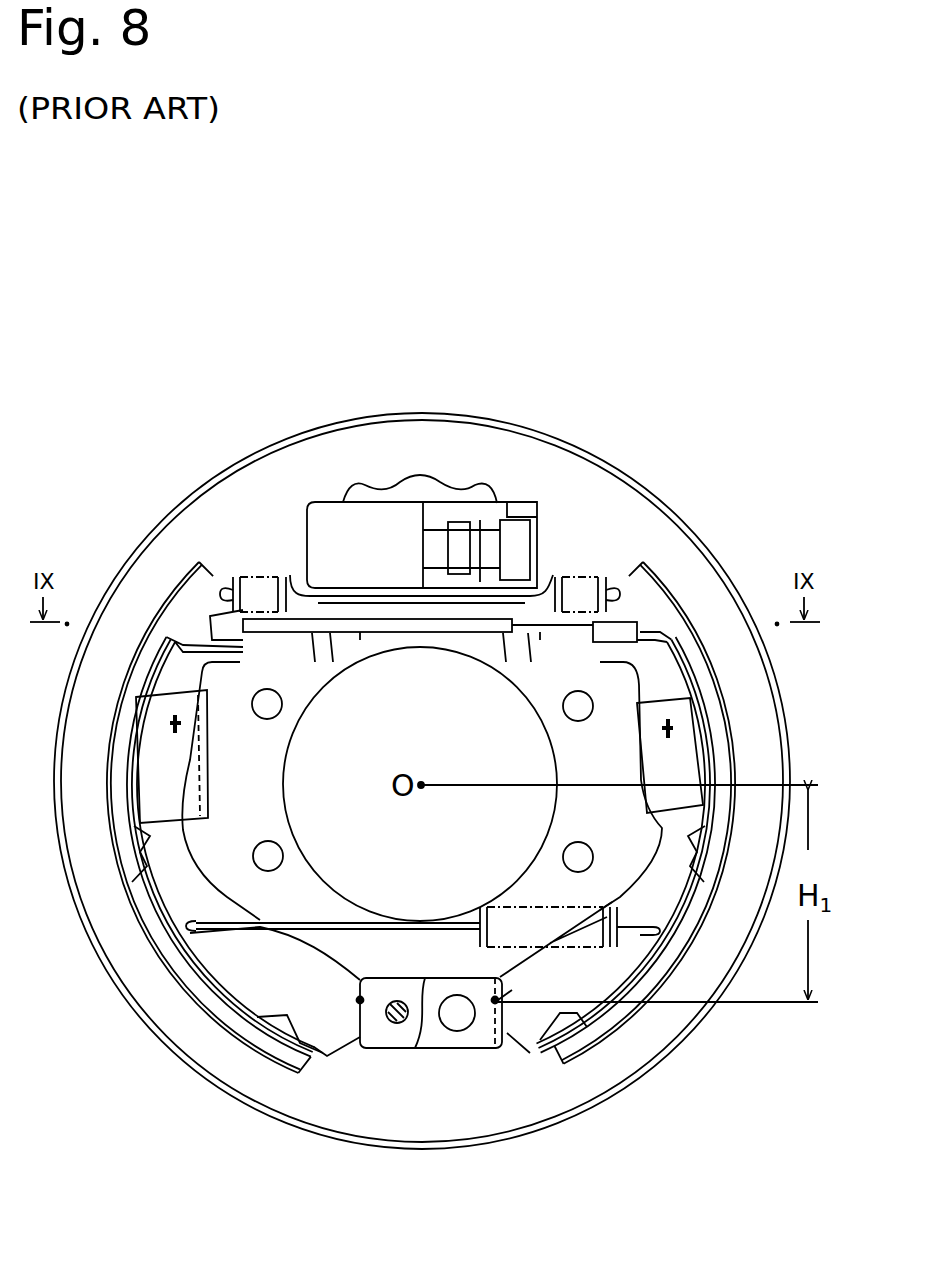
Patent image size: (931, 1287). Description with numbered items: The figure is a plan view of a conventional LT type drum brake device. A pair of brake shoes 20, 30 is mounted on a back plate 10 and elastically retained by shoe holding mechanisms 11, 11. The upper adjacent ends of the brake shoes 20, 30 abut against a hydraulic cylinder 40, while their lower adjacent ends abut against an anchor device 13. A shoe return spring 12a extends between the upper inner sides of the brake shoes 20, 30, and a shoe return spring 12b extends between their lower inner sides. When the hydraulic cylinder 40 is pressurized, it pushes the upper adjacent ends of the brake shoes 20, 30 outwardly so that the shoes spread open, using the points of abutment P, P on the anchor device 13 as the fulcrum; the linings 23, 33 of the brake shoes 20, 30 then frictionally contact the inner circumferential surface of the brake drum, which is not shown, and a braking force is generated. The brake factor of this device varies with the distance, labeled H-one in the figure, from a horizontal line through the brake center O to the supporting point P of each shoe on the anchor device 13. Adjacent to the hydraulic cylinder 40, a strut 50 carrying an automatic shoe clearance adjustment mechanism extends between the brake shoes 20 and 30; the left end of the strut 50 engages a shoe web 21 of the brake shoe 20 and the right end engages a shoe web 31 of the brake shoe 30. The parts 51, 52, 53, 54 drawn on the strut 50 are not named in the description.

The back plate 10 is at (620, 493).
The shoe holding mechanism 11 is at (136, 741).
The shoe return spring 12a is at (607, 567).
The shoe return spring 12b is at (480, 907).
The anchor device 13 is at (432, 1052).
The brake shoe 20 is at (214, 882).
The shoe web 21 is at (223, 973).
The lining 23 is at (240, 1028).
The brake shoe 30 is at (626, 902).
The shoe web 31 is at (532, 1033).
The lining 33 is at (586, 1040).
The hydraulic cylinder 40 is at (405, 498).
The strut 50 is at (423, 662).
The strut member 51 is at (360, 634).
The strut member 52 is at (543, 634).
The lever 53 is at (313, 634).
The lever 54 is at (522, 636).